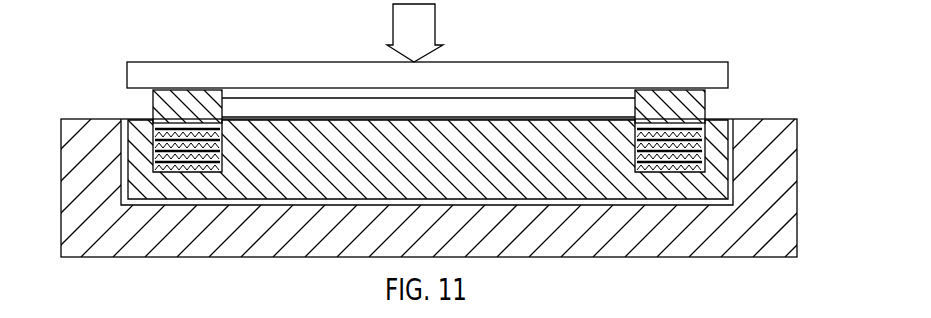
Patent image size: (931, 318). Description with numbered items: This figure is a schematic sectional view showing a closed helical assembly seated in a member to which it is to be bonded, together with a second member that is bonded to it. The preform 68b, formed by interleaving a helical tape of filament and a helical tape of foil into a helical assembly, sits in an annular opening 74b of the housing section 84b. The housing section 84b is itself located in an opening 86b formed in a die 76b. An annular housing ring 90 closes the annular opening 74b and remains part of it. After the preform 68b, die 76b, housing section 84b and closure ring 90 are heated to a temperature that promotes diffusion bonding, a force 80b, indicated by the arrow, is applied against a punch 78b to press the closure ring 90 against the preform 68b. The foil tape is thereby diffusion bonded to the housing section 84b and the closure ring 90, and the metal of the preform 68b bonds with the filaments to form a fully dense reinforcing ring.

The preform 68b is at (713, 108).
The annular opening 74b is at (150, 145).
The die 76b is at (83, 208).
The punch 78b is at (671, 78).
The force 80b is at (422, 25).
The housing section 84b is at (717, 148).
The opening 86b is at (745, 187).
The annular housing ring 90 is at (584, 109).